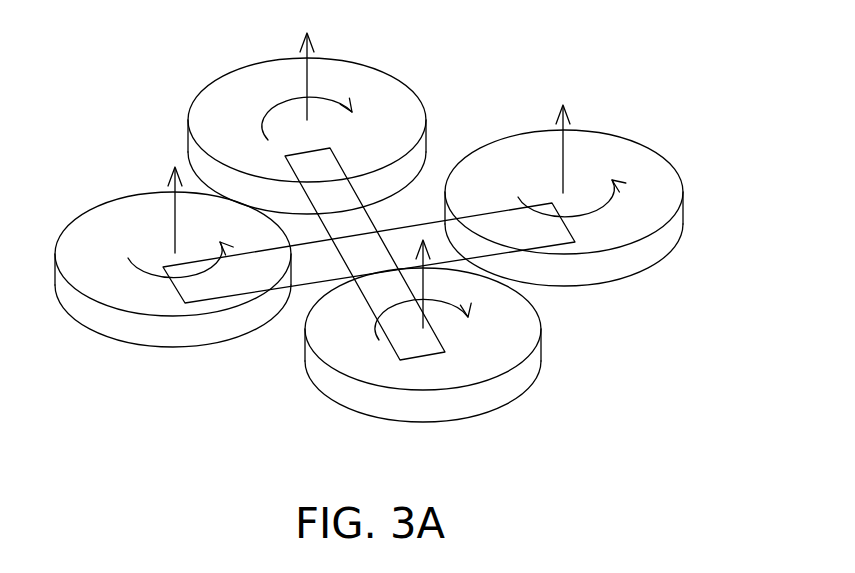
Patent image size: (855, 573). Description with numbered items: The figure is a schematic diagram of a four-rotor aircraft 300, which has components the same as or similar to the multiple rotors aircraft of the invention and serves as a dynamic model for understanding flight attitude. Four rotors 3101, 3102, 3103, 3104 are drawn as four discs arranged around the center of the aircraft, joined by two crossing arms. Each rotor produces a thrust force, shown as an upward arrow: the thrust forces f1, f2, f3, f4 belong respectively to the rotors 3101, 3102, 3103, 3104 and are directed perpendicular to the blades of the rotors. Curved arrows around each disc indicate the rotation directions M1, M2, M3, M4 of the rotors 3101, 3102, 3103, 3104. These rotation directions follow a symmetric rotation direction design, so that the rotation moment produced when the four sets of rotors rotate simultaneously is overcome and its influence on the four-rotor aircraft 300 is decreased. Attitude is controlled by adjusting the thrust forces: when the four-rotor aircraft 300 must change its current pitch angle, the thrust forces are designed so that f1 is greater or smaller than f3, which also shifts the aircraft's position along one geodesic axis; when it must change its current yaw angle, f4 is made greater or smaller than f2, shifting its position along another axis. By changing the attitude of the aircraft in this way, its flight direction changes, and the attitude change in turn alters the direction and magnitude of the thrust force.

The four-rotor aircraft 300 is at (737, 462).
The rotor 3101 is at (497, 225).
The rotor 3102 is at (328, 163).
The rotor 3103 is at (197, 292).
The rotor 3104 is at (425, 343).
The thrust force f1 is at (562, 130).
The thrust force f2 is at (306, 60).
The thrust force f3 is at (174, 192).
The thrust force f4 is at (424, 266).
The rotation direction M1 is at (572, 180).
The rotation direction M2 is at (315, 121).
The rotation direction M3 is at (180, 240).
The rotation direction M4 is at (441, 323).